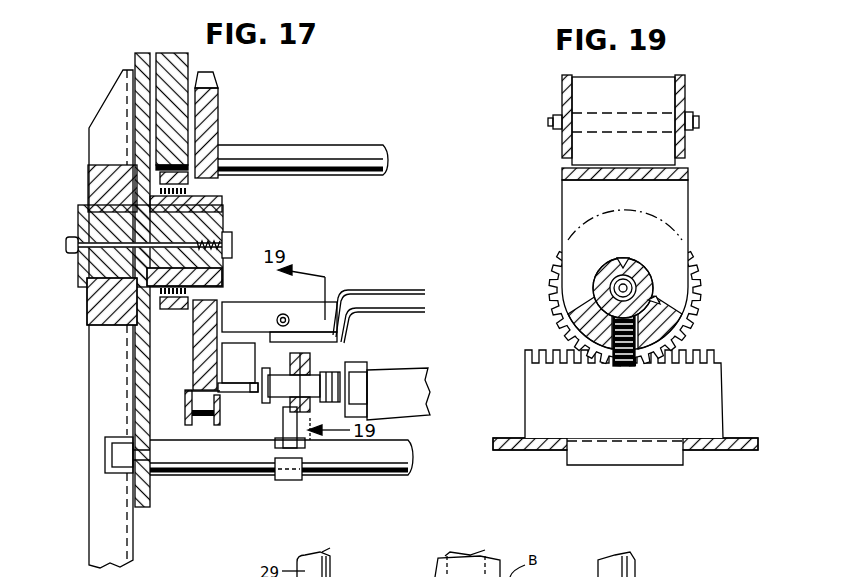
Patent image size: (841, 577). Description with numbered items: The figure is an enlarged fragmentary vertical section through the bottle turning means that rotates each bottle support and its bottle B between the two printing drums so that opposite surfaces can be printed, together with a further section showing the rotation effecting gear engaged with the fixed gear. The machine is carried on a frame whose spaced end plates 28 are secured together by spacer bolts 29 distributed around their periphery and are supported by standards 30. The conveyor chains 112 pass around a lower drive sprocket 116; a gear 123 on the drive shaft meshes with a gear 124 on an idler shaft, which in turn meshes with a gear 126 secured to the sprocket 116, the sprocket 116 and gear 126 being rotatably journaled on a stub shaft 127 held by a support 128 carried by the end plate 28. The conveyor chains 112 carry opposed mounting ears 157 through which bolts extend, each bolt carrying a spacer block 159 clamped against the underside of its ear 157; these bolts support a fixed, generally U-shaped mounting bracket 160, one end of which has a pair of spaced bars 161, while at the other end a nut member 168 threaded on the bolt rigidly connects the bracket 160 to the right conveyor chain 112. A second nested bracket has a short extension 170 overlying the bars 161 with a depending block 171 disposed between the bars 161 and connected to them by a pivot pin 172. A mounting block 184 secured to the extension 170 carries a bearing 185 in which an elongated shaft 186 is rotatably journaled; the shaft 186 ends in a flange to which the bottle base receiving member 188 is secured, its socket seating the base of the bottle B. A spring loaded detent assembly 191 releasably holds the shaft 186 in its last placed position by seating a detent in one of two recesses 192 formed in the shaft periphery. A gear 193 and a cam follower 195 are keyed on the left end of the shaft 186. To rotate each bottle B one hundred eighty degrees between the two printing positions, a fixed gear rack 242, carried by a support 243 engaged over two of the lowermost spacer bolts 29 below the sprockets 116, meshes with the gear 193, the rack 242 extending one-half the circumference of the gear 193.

In FIG. 17, the end plate 28 is at (145, 392).
In FIG. 17, the spacer bolt 29 is at (325, 148).
In FIG. 17, the standard 30 is at (93, 527).
In FIG. 17, the conveyor chain 112 is at (223, 422).
In FIG. 17, the lower drive sprocket 116 is at (210, 113).
In FIG. 17, the gear 123 is at (186, 74).
In FIG. 17, the gear 124 is at (182, 174).
In FIG. 17, the gear 126 is at (167, 312).
In FIG. 17, the stub shaft 127 is at (80, 267).
In FIG. 17, the support 128 is at (93, 317).
In FIG. 17, the mounting ear 157 is at (260, 394).
In FIG. 17, the spacer block 159 is at (236, 375).
In FIG. 17, the mounting bracket 160 is at (408, 290).
In FIG. 17, the bar 161 is at (240, 315).
In FIG. 19, the bar 161 is at (565, 89).
In FIG. 17, the nut member 168 is at (414, 311).
In FIG. 19, the short extension 170 is at (690, 175).
In FIG. 19, the block 171 is at (637, 93).
In FIG. 19, the pivot pin 172 is at (698, 128).
In FIG. 17, the mounting block 184 is at (333, 358).
In FIG. 19, the mounting block 184 is at (680, 220).
In FIG. 19, the bearing 185 is at (600, 270).
In FIG. 19, the shaft 186 is at (643, 280).
In FIG. 17, the bottle base receiving member 188 is at (357, 362).
In FIG. 19, the spring loaded detent assembly 191 is at (602, 310).
In FIG. 19, the recess 192 is at (626, 259).
In FIG. 17, the gear 193 is at (297, 360).
In FIG. 19, the gear 193 is at (702, 298).
In FIG. 17, the cam follower 195 is at (238, 363).
In FIG. 17, the gear rack 242 is at (287, 422).
In FIG. 19, the gear rack 242 is at (703, 400).
In FIG. 17, the support 243 is at (282, 480).
In FIG. 19, the support 243 is at (717, 452).
In FIG. 17, the bottle B is at (395, 376).